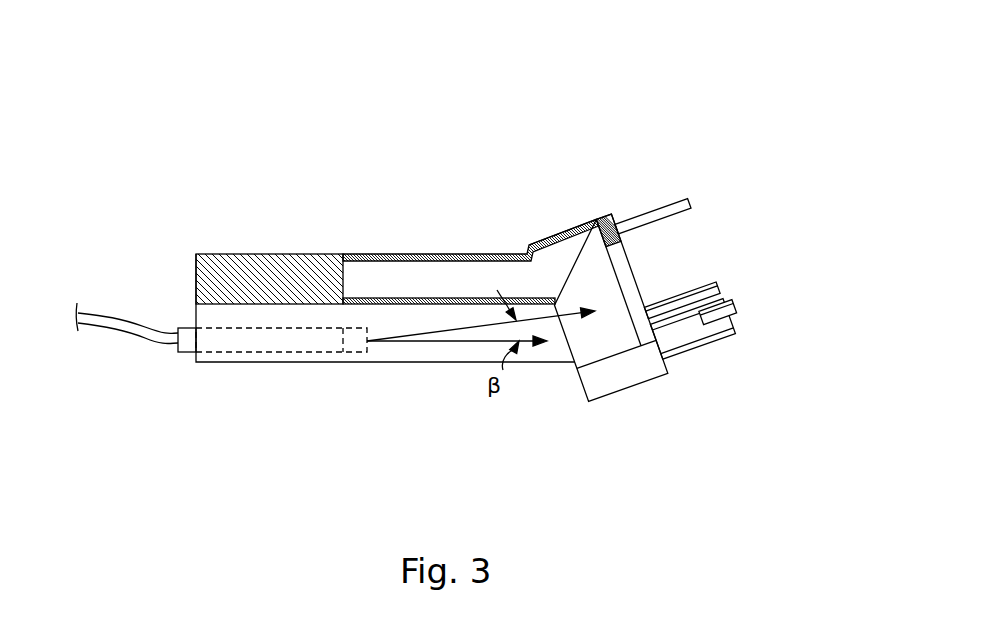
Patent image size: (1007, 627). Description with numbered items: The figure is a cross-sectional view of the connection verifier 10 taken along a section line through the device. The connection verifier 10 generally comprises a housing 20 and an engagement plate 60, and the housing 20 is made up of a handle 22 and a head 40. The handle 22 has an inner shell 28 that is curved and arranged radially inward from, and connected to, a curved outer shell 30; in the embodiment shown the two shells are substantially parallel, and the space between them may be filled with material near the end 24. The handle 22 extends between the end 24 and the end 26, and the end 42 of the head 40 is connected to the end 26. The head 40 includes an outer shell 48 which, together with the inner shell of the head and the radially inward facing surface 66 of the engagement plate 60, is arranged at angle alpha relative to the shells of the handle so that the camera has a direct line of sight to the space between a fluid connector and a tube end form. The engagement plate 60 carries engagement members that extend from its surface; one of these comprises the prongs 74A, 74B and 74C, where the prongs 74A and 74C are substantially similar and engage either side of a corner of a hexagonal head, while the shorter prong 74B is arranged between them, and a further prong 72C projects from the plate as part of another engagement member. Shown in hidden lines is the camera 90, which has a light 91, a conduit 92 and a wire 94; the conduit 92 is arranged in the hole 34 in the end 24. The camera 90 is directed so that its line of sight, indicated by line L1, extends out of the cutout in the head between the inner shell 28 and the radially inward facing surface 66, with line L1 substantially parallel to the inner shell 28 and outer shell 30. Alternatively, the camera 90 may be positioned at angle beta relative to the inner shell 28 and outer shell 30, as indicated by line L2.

The connection verifier 10 is at (246, 52).
The housing 20 is at (226, 254).
The handle 22 is at (285, 254).
The end 24 is at (196, 256).
The end 26 is at (548, 367).
The inner shell 28 is at (487, 298).
The outer shell 30 is at (398, 254).
The hole 34 is at (182, 316).
The head 40 is at (592, 218).
The end 42 is at (583, 396).
The outer shell 48 is at (555, 232).
The engagement plate 60 is at (633, 270).
The radially inward facing surface 66 is at (607, 252).
The tube 72C is at (682, 198).
The prong 74A is at (720, 286).
The prong 74B is at (736, 306).
The prong 74C is at (714, 343).
The camera 90 is at (347, 352).
The light 91 is at (366, 350).
The conduit 92 is at (188, 342).
The wire 94 is at (90, 322).
The line L1 is at (473, 343).
The line L2 is at (453, 327).